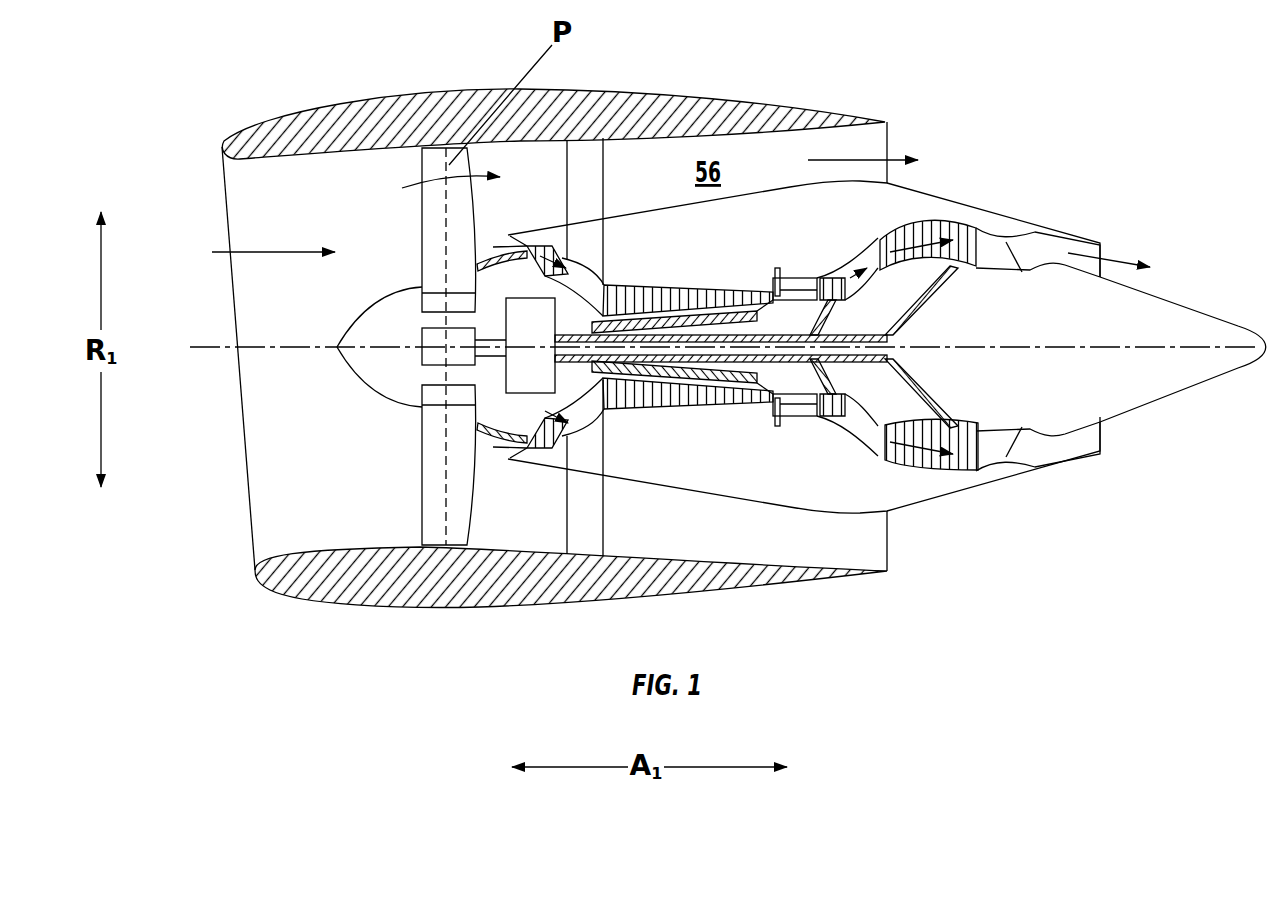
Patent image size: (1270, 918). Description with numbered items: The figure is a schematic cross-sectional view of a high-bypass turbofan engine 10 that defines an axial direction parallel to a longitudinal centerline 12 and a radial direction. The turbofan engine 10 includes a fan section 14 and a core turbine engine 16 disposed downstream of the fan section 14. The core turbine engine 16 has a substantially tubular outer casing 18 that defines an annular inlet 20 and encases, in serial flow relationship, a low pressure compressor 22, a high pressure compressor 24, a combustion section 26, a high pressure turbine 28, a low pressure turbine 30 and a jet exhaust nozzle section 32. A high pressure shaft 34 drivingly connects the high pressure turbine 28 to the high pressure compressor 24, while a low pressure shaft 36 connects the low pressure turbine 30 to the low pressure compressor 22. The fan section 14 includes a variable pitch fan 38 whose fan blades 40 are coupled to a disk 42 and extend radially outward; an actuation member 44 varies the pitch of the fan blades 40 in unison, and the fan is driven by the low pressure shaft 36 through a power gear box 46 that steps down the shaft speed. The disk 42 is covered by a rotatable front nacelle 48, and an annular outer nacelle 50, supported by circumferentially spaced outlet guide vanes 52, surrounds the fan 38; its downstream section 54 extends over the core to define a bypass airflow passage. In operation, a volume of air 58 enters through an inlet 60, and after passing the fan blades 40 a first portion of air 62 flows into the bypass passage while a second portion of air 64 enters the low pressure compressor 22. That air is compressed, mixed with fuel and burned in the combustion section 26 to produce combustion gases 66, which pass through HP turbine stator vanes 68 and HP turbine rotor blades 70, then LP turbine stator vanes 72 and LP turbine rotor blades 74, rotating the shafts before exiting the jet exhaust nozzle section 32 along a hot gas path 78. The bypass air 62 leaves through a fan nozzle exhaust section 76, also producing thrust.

The turbofan engine 10 is at (1022, 104).
The longitudinal centerline 12 is at (1043, 345).
The fan section 14 is at (462, 58).
The core turbine engine 16 is at (765, 243).
The outer casing 18 is at (750, 503).
The annular inlet 20 is at (512, 447).
The low pressure compressor 22 is at (565, 408).
The high pressure compressor 24 is at (628, 398).
The combustion section 26 is at (790, 407).
The high pressure turbine 28 is at (862, 416).
The low pressure turbine 30 is at (965, 468).
The jet exhaust nozzle section 32 is at (1023, 452).
The high pressure shaft 34 is at (795, 313).
The low pressure shaft 36 is at (907, 313).
The variable pitch fan 38 is at (388, 398).
The fan blades 40 is at (420, 490).
The disk 42 is at (443, 303).
The actuation member 44 is at (418, 328).
The power gear box 46 is at (545, 323).
The front nacelle 48 is at (350, 366).
The outer nacelle 50 is at (460, 607).
The outlet guide vanes 52 is at (603, 170).
The downstream section 54 is at (800, 108).
The volume of air 58 is at (272, 250).
The inlet 60 is at (248, 560).
The first portion of air 62 is at (437, 177).
The second portion of air 64 is at (500, 234).
The combustion gases 66 is at (927, 233).
The HP turbine stator vanes 68 is at (805, 418).
The HP turbine rotor blades 70 is at (875, 386).
The LP turbine stator vanes 72 is at (892, 452).
The LP turbine rotor blades 74 is at (903, 457).
The fan nozzle exhaust section 76 is at (877, 148).
The hot gas path 78 is at (877, 256).